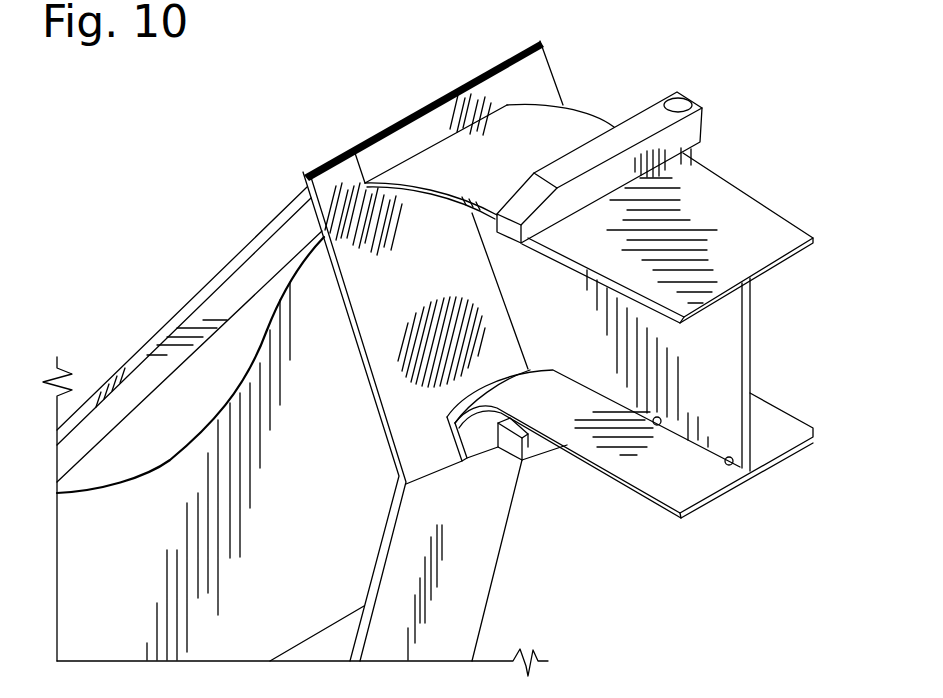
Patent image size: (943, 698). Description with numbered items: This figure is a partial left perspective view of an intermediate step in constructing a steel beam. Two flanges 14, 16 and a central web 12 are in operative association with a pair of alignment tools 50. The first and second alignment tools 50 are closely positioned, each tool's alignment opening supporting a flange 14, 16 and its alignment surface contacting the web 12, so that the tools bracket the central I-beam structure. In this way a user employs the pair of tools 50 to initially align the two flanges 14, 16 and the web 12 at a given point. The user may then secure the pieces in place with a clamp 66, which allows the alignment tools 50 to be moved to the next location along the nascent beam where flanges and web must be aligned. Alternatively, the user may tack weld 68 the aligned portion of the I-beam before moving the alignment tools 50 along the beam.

The alignment tool 50 is at (545, 101).
The clamp 66 is at (703, 121).
The flange 14 is at (773, 231).
The central web 12 is at (751, 352).
The flange 16 is at (773, 426).
The tack weld 68 is at (725, 462).